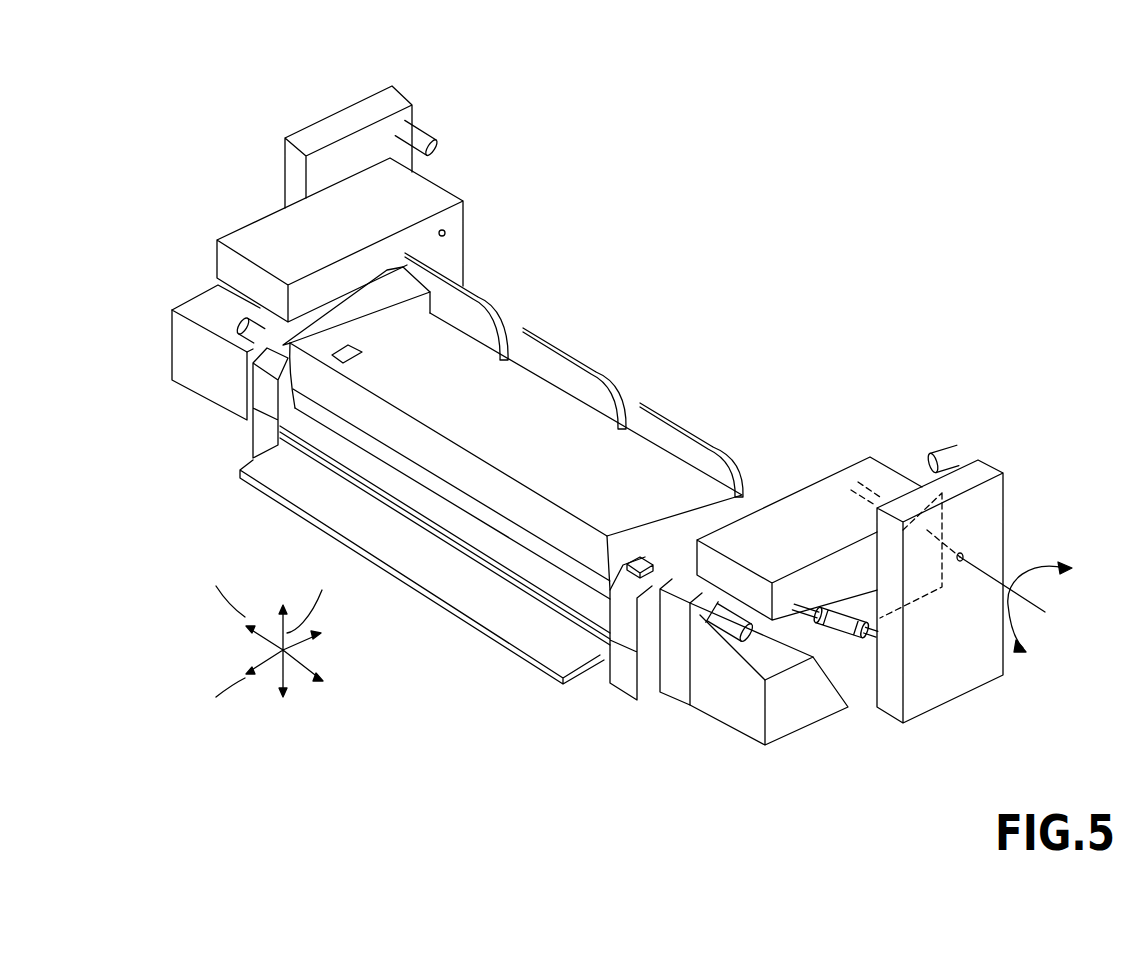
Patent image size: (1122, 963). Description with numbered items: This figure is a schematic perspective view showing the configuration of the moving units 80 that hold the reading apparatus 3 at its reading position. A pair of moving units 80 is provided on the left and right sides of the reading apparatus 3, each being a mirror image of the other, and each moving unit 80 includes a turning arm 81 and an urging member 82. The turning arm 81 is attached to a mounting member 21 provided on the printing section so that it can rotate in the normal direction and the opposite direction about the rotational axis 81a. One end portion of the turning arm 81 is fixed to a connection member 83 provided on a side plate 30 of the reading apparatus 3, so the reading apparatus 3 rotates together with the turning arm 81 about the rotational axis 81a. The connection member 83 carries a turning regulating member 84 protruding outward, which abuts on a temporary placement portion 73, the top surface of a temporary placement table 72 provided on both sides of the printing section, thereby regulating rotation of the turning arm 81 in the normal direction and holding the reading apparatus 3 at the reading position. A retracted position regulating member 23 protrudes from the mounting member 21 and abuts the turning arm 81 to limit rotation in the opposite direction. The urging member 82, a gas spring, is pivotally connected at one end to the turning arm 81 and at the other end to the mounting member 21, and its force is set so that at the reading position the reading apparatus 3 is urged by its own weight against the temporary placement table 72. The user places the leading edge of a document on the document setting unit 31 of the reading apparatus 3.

The reading apparatus 3 is at (640, 341).
The mounting member 21 is at (383, 87).
The retracted position regulating member 23 is at (423, 130).
The side plate 30 is at (325, 322).
The document setting unit 31 is at (310, 492).
The temporary placement table 72 is at (237, 414).
The temporary placement portion 73 is at (212, 298).
The moving unit 80 is at (898, 372).
The turning arm 81 is at (418, 207).
The rotational axis 81a is at (442, 230).
The urging member 82 is at (840, 613).
The connection member 83 is at (248, 345).
The turning regulating member 84 is at (240, 322).